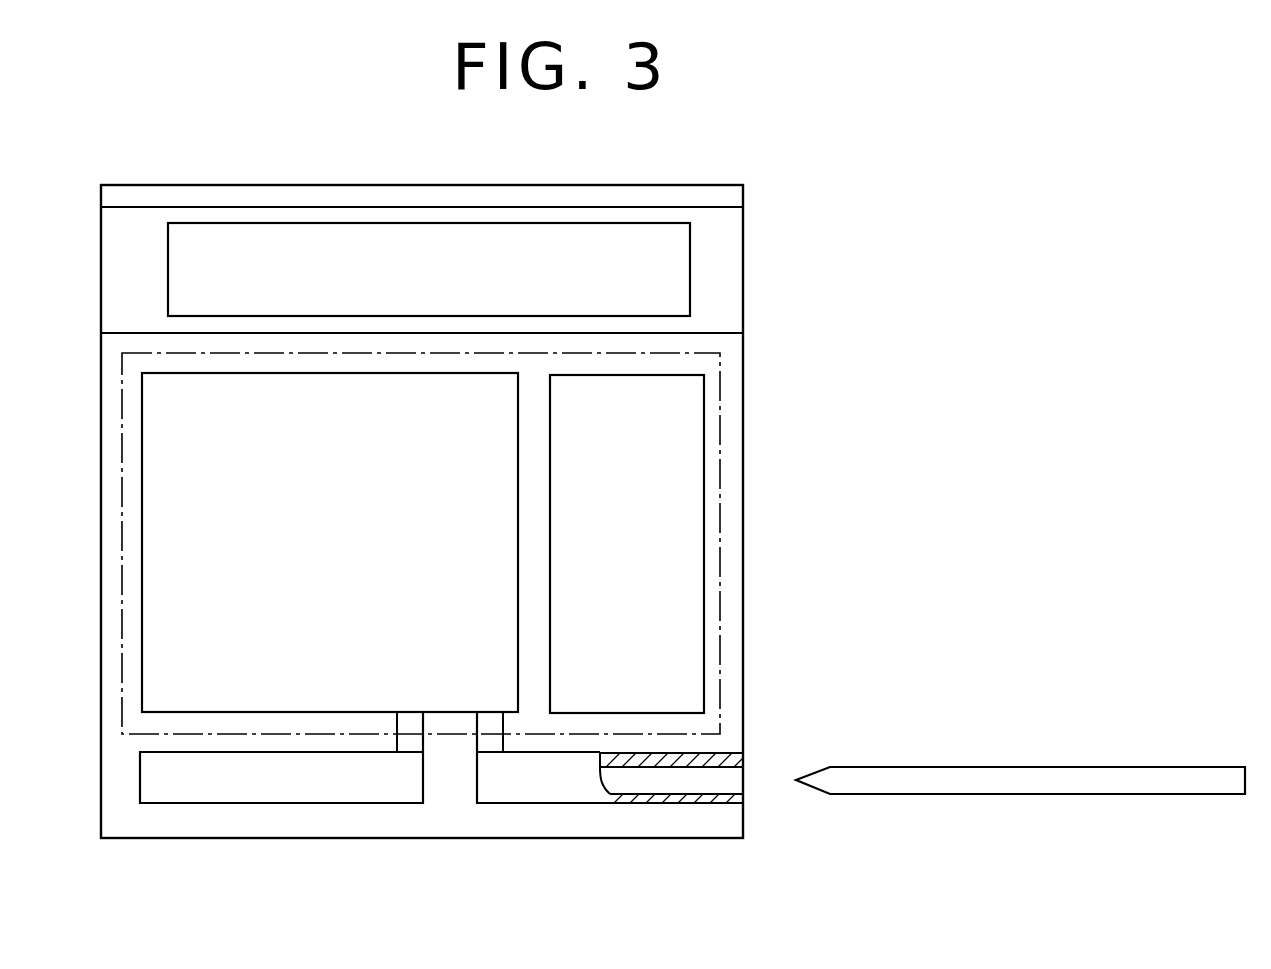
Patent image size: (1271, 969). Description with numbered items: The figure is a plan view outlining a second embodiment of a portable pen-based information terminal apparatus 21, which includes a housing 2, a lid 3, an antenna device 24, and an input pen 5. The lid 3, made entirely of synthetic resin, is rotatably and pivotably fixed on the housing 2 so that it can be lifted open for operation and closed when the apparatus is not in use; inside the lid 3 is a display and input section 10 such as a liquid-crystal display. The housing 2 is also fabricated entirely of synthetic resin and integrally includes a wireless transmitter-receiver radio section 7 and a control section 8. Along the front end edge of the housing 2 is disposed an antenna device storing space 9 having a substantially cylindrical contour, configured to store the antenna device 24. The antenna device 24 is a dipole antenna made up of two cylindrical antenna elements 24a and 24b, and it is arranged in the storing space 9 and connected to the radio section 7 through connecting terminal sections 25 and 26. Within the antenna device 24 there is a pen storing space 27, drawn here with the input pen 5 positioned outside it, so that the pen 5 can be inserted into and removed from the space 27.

The portable pen-based information terminal apparatus 21 is at (838, 182).
The lid 3 is at (733, 284).
The display and input section 10 is at (522, 245).
The housing 2 is at (733, 414).
The radio section 7 is at (158, 535).
The control section 8 is at (690, 523).
The connecting terminal section 25 is at (410, 720).
The connecting terminal section 26 is at (488, 720).
The antenna device 24 is at (441, 832).
The antenna element 24a is at (378, 790).
The antenna element 24b is at (610, 803).
The pen storing space 27 is at (722, 777).
The antenna device storing space 9 is at (680, 778).
The input pen 5 is at (1030, 777).